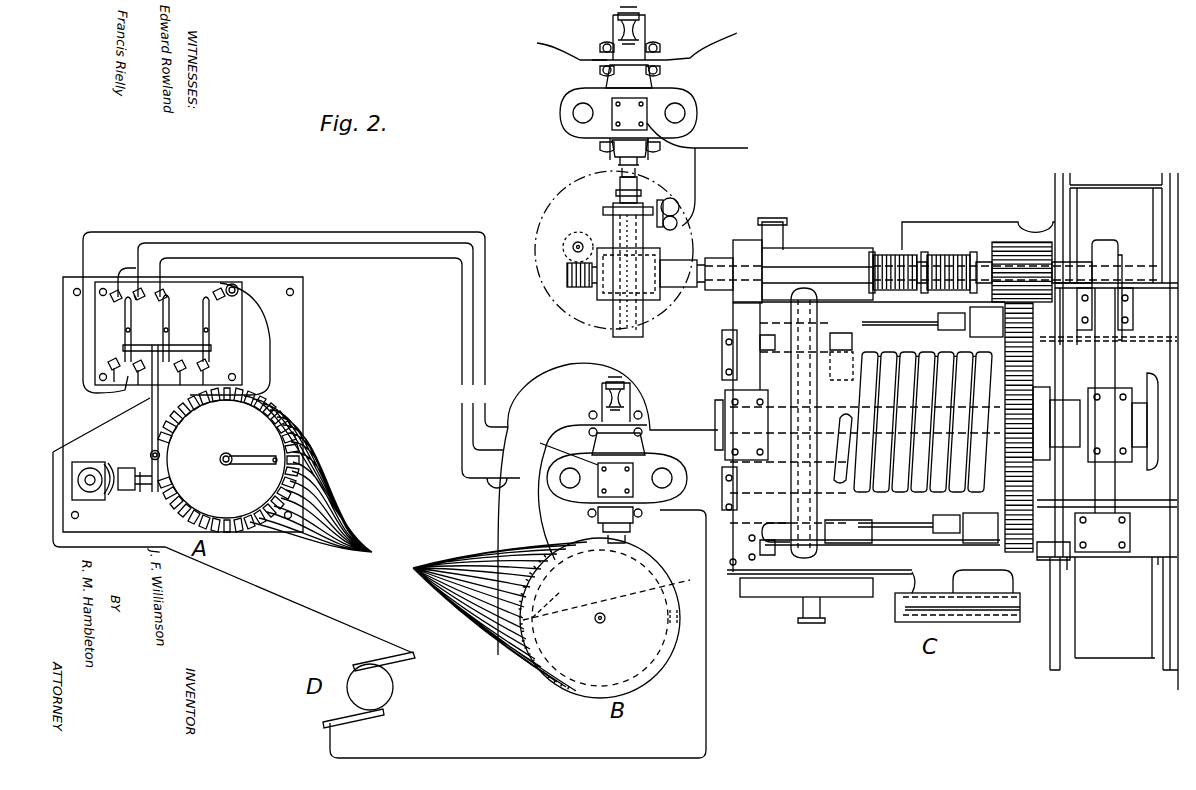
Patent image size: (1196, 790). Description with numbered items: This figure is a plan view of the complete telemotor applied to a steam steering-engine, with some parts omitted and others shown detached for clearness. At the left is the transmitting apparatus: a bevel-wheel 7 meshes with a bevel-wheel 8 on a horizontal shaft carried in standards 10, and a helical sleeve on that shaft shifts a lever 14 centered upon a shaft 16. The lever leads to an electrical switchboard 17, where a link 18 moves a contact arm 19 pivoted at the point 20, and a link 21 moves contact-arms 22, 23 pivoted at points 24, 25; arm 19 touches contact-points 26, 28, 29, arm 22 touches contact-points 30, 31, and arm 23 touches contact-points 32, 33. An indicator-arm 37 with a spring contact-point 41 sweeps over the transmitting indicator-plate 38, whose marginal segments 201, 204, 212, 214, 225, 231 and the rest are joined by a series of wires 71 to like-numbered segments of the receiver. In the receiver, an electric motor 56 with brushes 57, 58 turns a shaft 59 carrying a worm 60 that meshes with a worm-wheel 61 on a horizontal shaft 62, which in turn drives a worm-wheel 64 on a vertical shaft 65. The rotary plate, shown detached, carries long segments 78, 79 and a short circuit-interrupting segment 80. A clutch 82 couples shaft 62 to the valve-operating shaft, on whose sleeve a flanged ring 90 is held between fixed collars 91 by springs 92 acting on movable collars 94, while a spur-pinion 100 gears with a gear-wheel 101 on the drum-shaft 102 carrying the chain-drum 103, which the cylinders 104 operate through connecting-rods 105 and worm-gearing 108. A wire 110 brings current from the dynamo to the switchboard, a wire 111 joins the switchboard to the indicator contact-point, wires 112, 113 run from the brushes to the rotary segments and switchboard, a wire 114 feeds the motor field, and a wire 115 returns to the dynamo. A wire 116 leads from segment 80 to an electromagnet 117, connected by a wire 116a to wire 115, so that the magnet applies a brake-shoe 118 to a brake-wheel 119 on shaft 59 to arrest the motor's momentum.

The bevel-wheel 7 is at (88, 475).
The bevel-wheel 8 is at (107, 471).
The standards 10 is at (135, 480).
The lever 14 is at (152, 414).
The shaft 16 is at (150, 455).
The electrical switchboard 17 is at (168, 333).
The link 18 is at (167, 341).
The contact arm 19 is at (131, 318).
The pivot point 20 is at (139, 328).
The link 21 is at (166, 311).
The contact-arm 22 is at (170, 318).
The contact-arm 23 is at (209, 318).
The pivot point 24 is at (179, 325).
The pivot point 25 is at (209, 330).
The contact-point 26 is at (114, 302).
The contact-point 28 is at (109, 365).
The contact-point 29 is at (142, 366).
The contact-point 30 is at (168, 289).
The contact-point 31 is at (186, 371).
The contact-point 32 is at (222, 297).
The contact-point 33 is at (211, 371).
The indicator-arm 37 is at (226, 453).
The transmitting indicator-plate 38 is at (228, 460).
The contact-point 41 is at (270, 456).
The electric motor 56 is at (613, 416).
The brush 57 is at (690, 432).
The brush 58 is at (626, 47).
The motor shaft 59 is at (618, 200).
The worm 60 is at (598, 292).
The worm-wheel 61 is at (614, 228).
The horizontal shaft 62 is at (567, 277).
The worm-wheel 64 is at (562, 246).
The vertical shaft 65 is at (614, 250).
The wires 71 is at (415, 543).
The segment 78 is at (650, 562).
The segment 79 is at (656, 668).
The circuit-interrupting segment 80 is at (547, 602).
The clutch 82 is at (700, 290).
The flanged ring 90 is at (922, 294).
The fixed collars 91 is at (871, 254).
The springs 92 is at (975, 216).
The movable collars 94 is at (950, 257).
The spur-pinion 100 is at (1022, 272).
The gear-wheel 101 is at (1005, 344).
The drum-shaft 102 is at (635, 471).
The chain-drum 103 is at (923, 414).
The cylinders 104 is at (1107, 431).
The connecting-rods 105 is at (916, 610).
The worm-gearing 108 is at (804, 423).
The wire 110 is at (233, 465).
The wire 111 is at (118, 282).
The wire 112 is at (205, 240).
The wire 113 is at (383, 301).
The wire 114 is at (295, 320).
The wire 115 is at (436, 746).
The wire 116 is at (606, 601).
The wire 116a is at (698, 180).
The electromagnet 117 is at (678, 224).
The brake-shoe 118 is at (672, 198).
The brake-wheel 119 is at (680, 228).
The segment 201 is at (172, 466).
The segment 204 is at (572, 682).
The segment 212 is at (546, 636).
The segment 214 is at (542, 616).
The segment 225 is at (556, 558).
The segment 231 is at (608, 548).